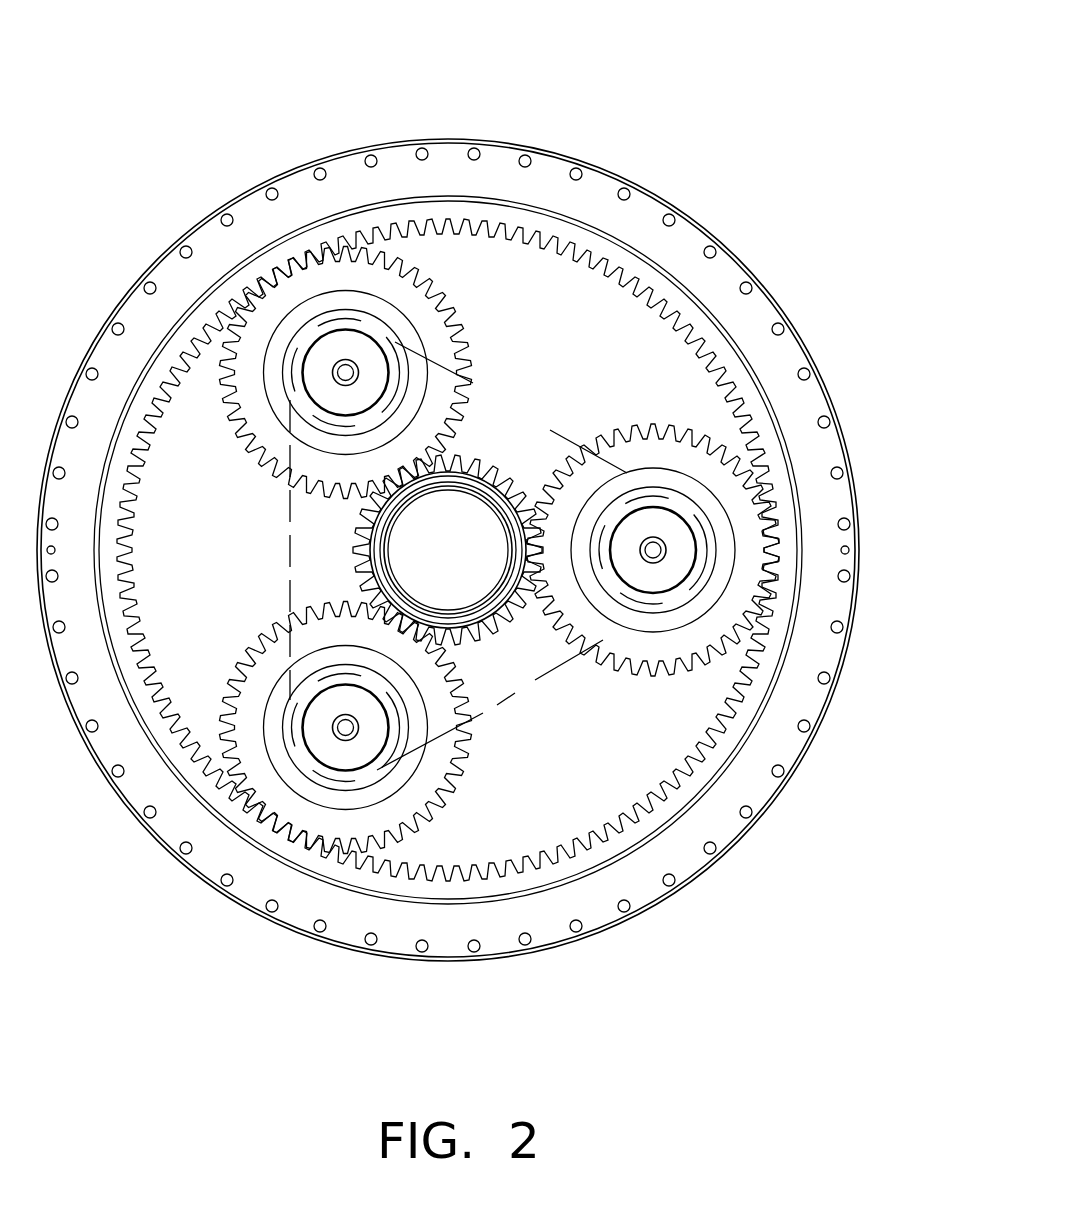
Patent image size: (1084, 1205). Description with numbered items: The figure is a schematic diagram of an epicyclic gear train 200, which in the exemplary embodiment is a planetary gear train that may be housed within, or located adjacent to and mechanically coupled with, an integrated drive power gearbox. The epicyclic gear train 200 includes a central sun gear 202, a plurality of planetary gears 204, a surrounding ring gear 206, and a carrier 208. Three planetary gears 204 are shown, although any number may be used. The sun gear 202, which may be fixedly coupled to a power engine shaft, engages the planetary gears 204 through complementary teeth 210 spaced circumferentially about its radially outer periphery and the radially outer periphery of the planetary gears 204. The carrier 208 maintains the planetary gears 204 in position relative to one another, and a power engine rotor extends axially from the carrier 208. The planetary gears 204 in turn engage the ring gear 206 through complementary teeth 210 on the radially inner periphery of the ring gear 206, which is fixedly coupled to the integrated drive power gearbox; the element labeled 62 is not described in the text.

The epicyclic gear train 200 is at (645, 60).
The sun gear 202 is at (533, 630).
The planetary gears 204 is at (322, 333).
The ring gear 206 is at (735, 255).
The carrier 208 is at (540, 687).
The complementary teeth 210 is at (466, 376).
The ring gear 62 is at (697, 782).